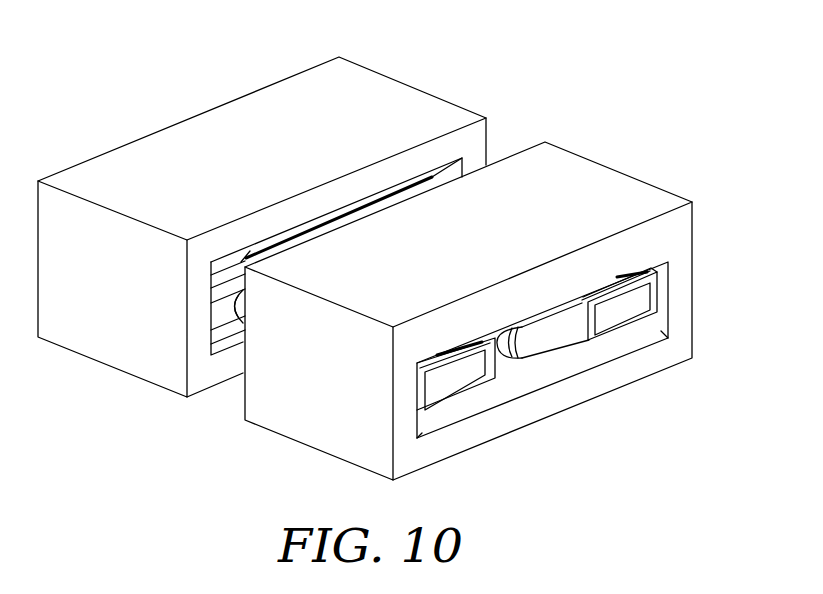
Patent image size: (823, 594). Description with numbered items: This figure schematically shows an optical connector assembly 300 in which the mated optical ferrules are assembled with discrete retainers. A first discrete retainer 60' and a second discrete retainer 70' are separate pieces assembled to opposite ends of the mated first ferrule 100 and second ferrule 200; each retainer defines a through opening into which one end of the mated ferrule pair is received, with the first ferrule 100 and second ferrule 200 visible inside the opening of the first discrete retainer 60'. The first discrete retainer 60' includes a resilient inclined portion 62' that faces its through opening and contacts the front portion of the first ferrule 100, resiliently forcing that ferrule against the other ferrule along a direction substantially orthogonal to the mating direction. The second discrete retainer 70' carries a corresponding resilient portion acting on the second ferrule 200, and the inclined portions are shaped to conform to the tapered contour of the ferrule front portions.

The optical connector assembly 300 is at (676, 67).
The second discrete retainer 70' is at (262, 227).
The first discrete retainer 60' is at (482, 296).
The inclined portion 62' is at (542, 321).
The first ferrule 100 is at (550, 335).
The second ferrule 200 is at (613, 307).